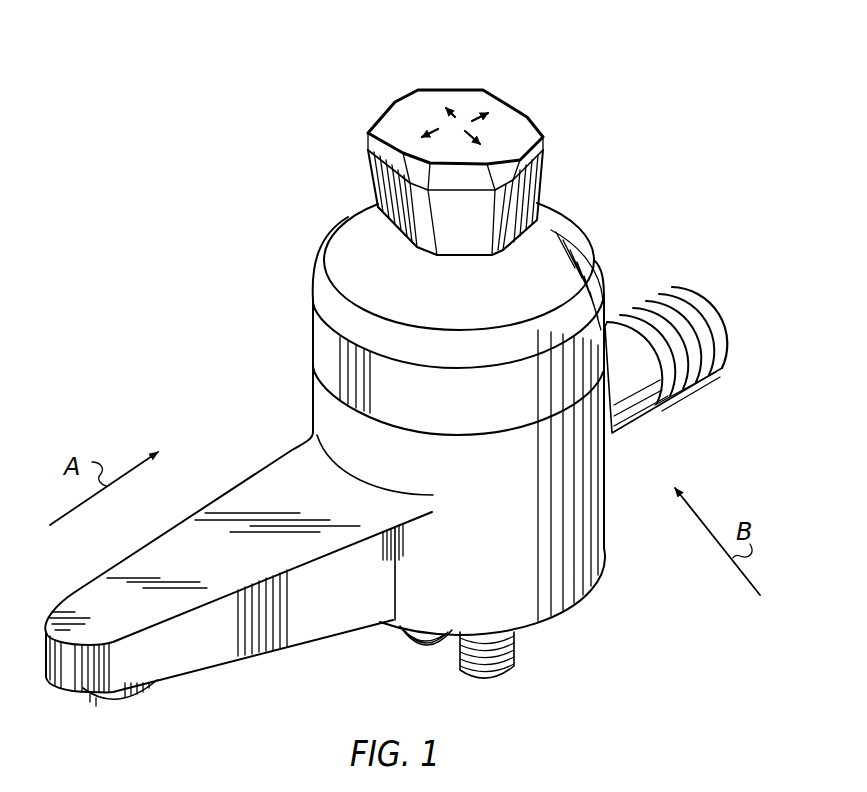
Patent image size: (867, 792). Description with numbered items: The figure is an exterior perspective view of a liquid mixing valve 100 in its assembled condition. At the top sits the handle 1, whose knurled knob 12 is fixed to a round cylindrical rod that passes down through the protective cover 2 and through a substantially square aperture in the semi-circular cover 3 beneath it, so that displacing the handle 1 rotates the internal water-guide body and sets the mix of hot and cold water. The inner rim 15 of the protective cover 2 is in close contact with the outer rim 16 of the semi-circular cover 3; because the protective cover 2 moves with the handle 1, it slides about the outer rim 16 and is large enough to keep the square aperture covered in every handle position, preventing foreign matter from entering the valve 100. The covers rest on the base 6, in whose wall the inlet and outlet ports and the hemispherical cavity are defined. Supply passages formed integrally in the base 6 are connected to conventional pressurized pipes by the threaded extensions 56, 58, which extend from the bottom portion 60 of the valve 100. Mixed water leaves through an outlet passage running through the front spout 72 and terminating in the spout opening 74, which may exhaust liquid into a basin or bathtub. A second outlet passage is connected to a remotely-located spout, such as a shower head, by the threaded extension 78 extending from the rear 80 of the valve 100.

The handle 1 is at (522, 110).
The knurled knob 12 is at (545, 156).
The protective cover 2 is at (570, 218).
The inner rim 15 is at (590, 253).
The semi-circular cover 3 is at (608, 283).
The outer rim 16 is at (610, 287).
The base 6 is at (335, 413).
The bottom portion 60 is at (557, 617).
The rear 80 is at (605, 476).
The front spout 72 is at (150, 560).
The spout opening 74 is at (117, 701).
The threaded extension 56 is at (422, 648).
The threaded extension 58 is at (505, 672).
The threaded extension 78 is at (698, 372).
The liquid mixing valve 100 is at (311, 233).